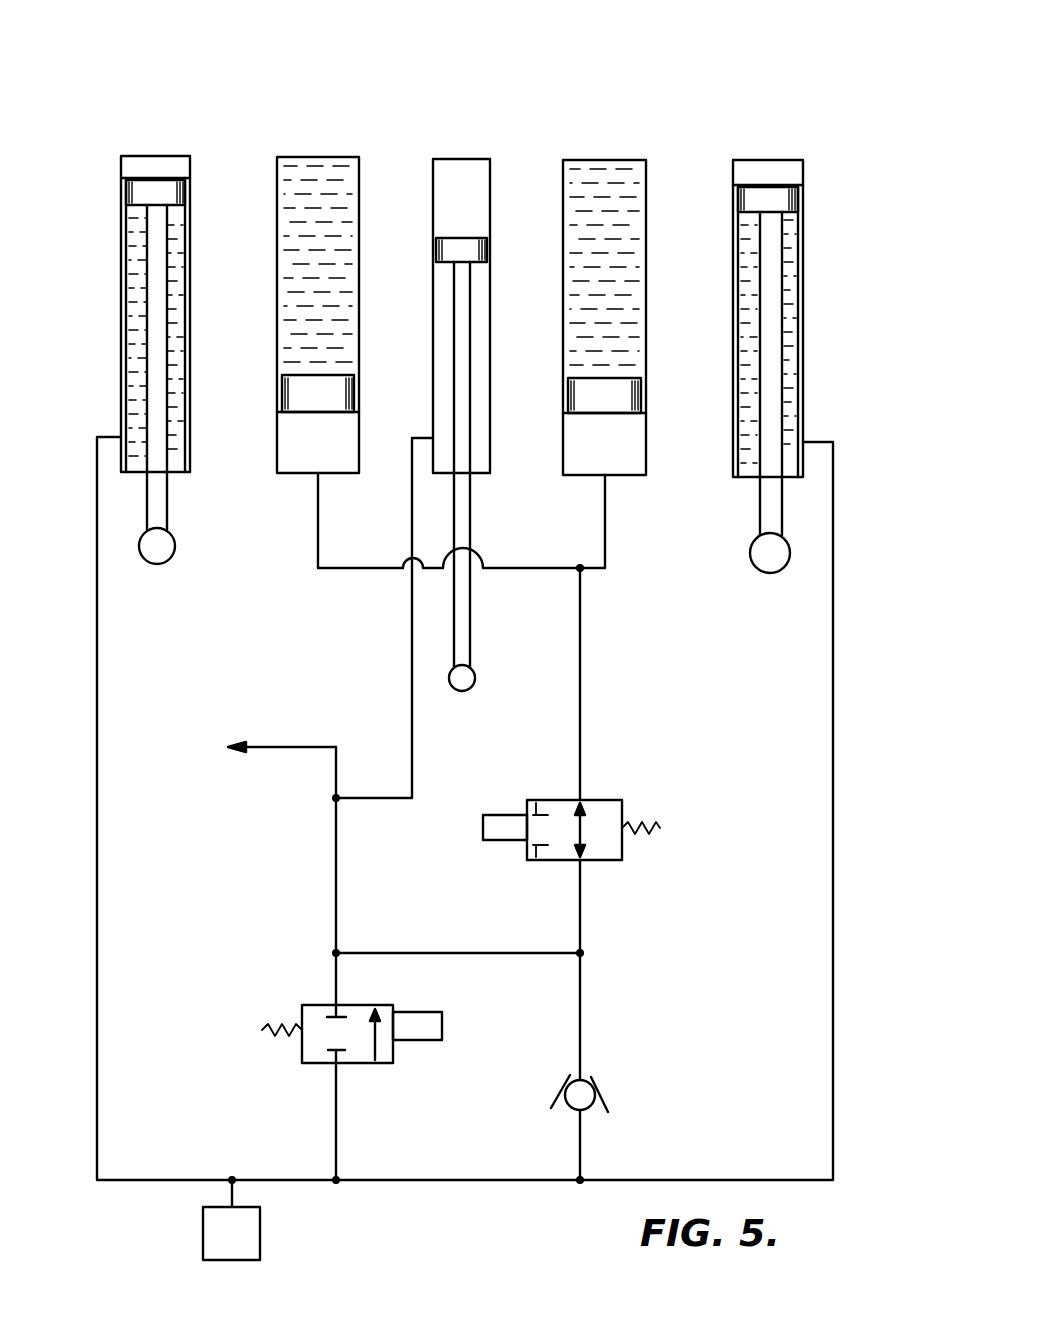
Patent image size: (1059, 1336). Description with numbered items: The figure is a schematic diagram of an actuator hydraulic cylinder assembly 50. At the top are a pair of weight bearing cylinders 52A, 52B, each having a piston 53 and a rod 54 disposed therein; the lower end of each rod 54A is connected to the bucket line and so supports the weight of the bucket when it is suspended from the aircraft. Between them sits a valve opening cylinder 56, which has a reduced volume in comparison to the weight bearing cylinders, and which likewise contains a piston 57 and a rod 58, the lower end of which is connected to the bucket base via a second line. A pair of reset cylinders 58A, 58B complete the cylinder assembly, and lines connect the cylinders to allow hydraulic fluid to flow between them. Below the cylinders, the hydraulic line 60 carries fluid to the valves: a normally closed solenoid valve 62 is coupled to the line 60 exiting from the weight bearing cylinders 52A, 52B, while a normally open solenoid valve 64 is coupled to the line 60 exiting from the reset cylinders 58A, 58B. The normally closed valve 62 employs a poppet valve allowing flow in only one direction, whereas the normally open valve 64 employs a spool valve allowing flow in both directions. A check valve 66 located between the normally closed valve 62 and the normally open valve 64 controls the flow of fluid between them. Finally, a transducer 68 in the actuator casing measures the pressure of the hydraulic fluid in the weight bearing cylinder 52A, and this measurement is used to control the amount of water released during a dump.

The hydraulic cylinder assembly 50 is at (669, 127).
The weight bearing cylinder 52A is at (128, 158).
The weight bearing cylinder 52B is at (792, 161).
The piston 53 is at (183, 193).
The rod 54 is at (118, 328).
The lower end of rod 54A is at (163, 552).
The valve opening cylinder 56 is at (460, 160).
The piston 57 is at (433, 252).
The rod 58 is at (467, 510).
The reset cylinder 58A is at (328, 158).
The reset cylinder 58B is at (592, 161).
The line 60 is at (98, 905).
The normally closed solenoid valve 62 is at (307, 1000).
The normally open solenoid valve 64 is at (613, 848).
The check valve 66 is at (588, 1090).
The transducer 68 is at (252, 1228).